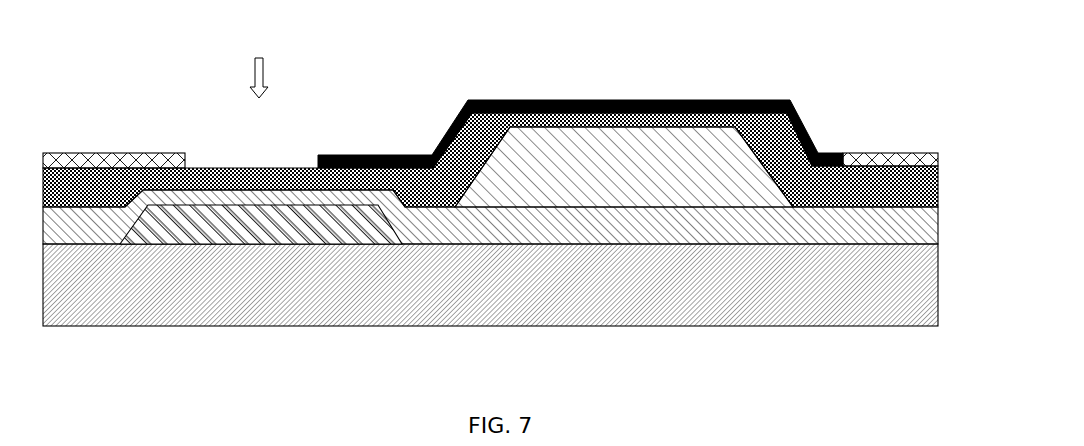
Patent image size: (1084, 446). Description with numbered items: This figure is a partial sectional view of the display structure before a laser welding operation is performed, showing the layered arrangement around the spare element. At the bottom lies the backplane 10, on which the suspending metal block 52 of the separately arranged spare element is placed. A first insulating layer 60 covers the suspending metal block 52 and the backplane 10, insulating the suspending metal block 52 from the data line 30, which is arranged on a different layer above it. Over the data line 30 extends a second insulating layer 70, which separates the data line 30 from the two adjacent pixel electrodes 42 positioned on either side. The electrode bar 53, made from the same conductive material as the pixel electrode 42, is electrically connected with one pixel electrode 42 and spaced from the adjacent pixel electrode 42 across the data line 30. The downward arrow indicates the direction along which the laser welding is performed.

The backplane 10 is at (641, 312).
The first insulating layer 60 is at (822, 230).
The suspending metal block 52 is at (203, 233).
The data line 30 is at (565, 185).
The second insulating layer 70 is at (768, 147).
The electrode bar 53 is at (645, 100).
The pixel electrode 42 is at (83, 163).